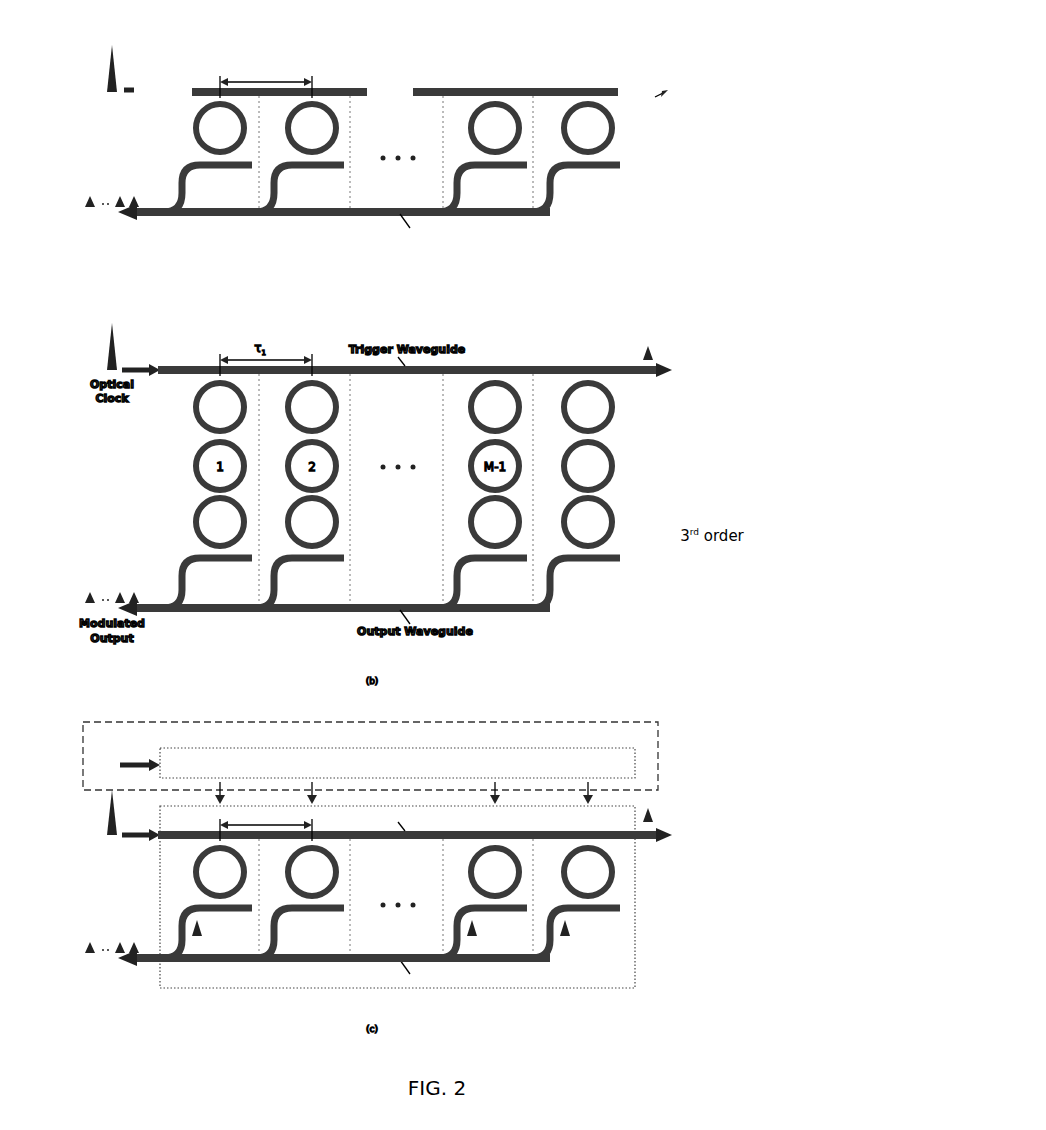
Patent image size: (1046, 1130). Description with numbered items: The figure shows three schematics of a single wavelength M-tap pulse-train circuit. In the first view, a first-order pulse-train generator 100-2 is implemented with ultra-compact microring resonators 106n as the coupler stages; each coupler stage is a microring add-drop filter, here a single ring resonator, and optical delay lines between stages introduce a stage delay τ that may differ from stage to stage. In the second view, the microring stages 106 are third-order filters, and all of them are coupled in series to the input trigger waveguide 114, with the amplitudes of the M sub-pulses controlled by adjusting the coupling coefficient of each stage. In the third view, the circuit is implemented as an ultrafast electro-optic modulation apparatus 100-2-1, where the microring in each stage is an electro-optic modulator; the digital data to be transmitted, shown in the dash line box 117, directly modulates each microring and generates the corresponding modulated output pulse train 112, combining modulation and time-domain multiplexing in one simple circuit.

The single wavelength M-tap, first-order pulse-train generator 100-2 is at (666, 29).
The microring resonator 106n is at (613, 128).
The input trigger waveguide 114 is at (535, 366).
The microring stages 106 is at (612, 412).
The dash line box 117 is at (643, 718).
The ultrafast electro-optic modulation apparatus 100-2-1 is at (456, 902).
The modulated output pulse train 112 is at (87, 988).